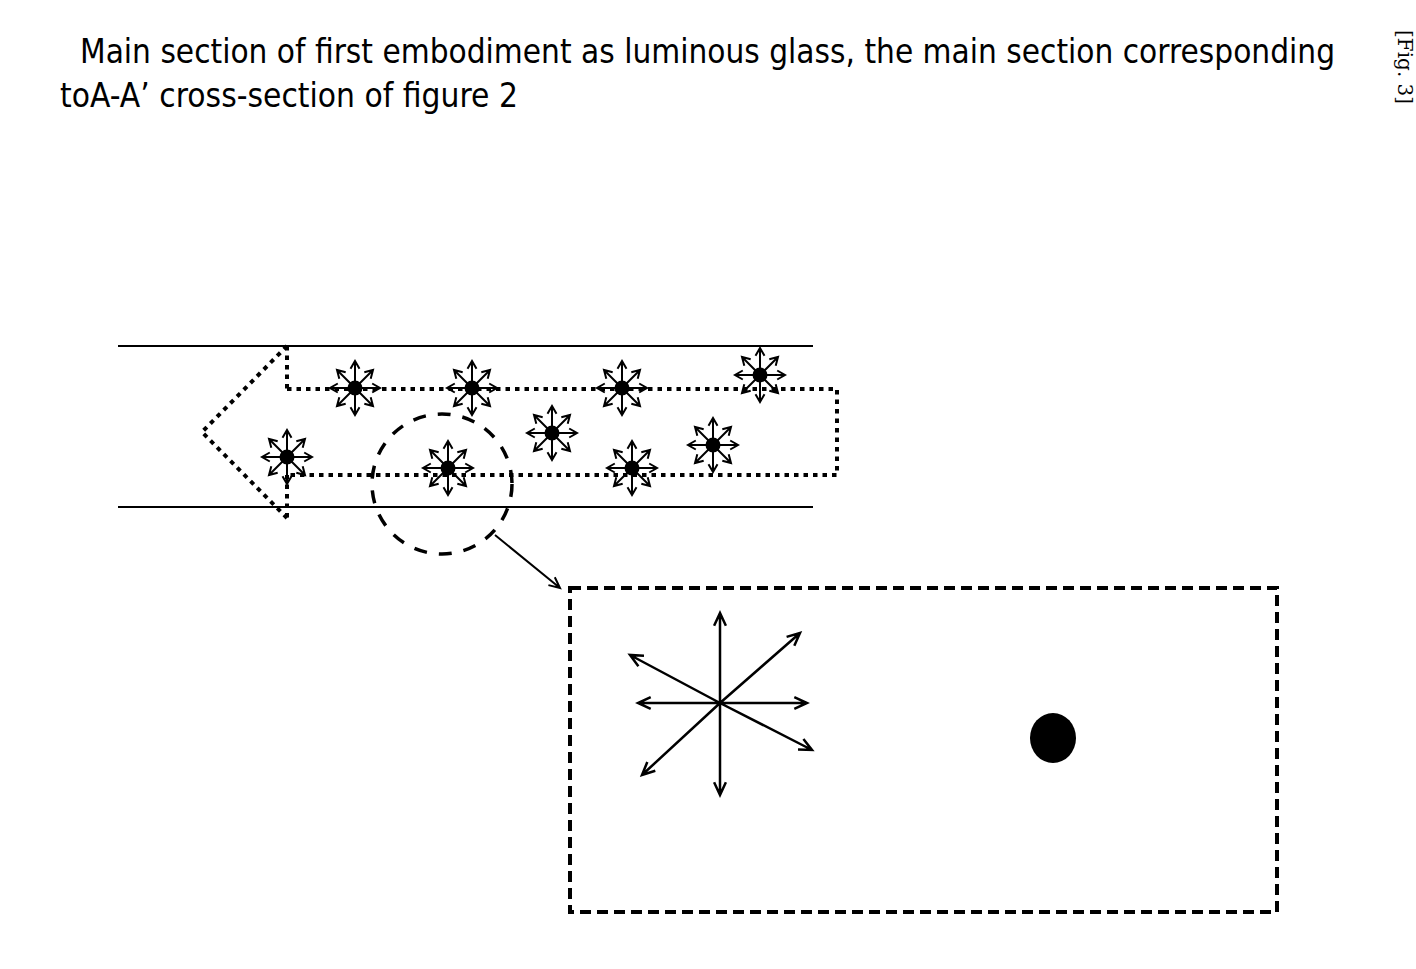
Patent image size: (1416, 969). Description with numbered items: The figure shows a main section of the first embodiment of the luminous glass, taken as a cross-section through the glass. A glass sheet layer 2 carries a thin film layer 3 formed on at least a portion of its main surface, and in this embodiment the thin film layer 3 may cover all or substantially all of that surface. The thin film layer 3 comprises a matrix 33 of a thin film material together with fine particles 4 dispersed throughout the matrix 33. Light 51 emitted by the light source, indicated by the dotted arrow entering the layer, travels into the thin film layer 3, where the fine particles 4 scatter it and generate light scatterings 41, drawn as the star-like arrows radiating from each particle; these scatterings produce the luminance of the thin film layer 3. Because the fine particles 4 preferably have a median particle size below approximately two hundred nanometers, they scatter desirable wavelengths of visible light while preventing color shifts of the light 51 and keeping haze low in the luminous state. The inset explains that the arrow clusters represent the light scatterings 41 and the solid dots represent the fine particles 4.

The glass sheet layer 2 is at (408, 311).
The thin film layer 3 is at (189, 415).
The matrix 33 is at (157, 483).
The light 51 is at (837, 403).
The light scatterings 41 is at (752, 752).
The fine particles 4 is at (1088, 802).